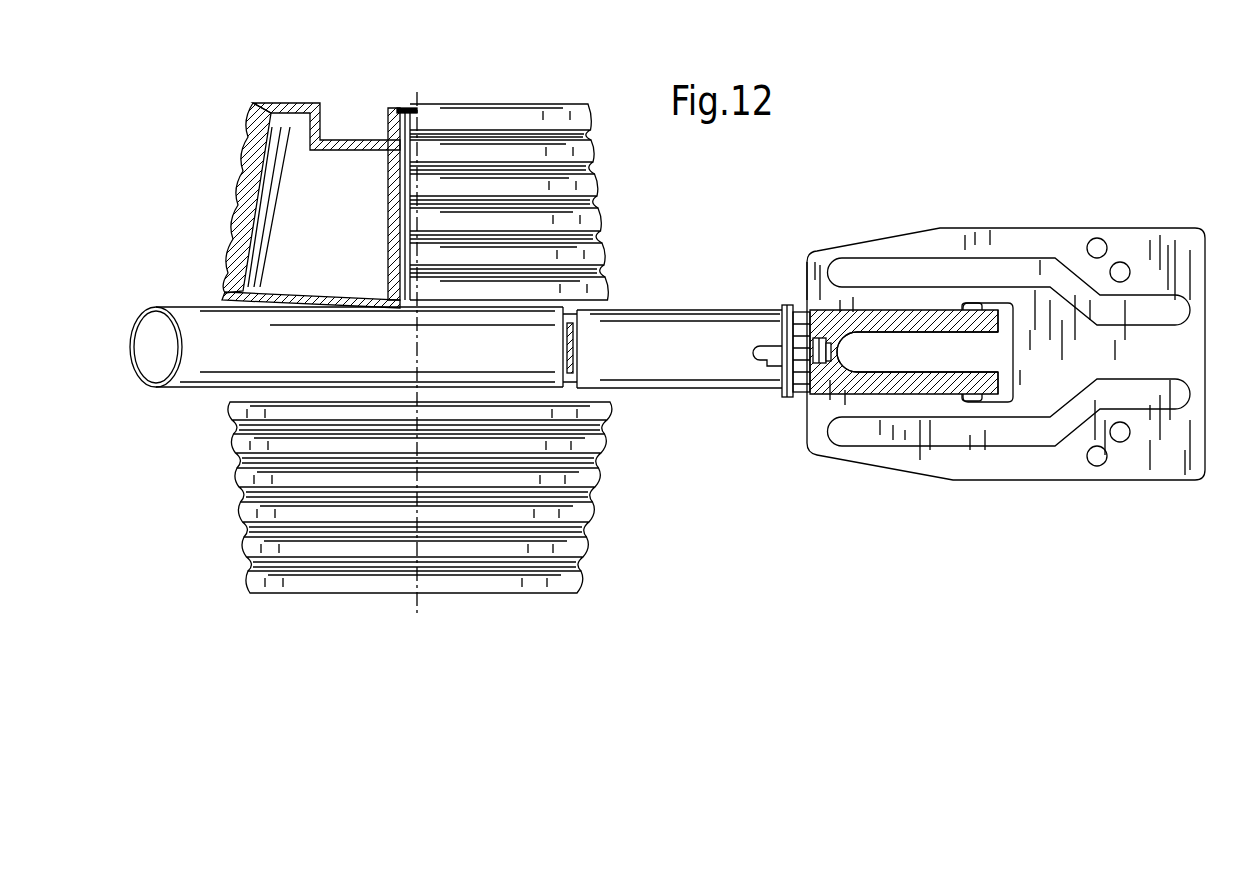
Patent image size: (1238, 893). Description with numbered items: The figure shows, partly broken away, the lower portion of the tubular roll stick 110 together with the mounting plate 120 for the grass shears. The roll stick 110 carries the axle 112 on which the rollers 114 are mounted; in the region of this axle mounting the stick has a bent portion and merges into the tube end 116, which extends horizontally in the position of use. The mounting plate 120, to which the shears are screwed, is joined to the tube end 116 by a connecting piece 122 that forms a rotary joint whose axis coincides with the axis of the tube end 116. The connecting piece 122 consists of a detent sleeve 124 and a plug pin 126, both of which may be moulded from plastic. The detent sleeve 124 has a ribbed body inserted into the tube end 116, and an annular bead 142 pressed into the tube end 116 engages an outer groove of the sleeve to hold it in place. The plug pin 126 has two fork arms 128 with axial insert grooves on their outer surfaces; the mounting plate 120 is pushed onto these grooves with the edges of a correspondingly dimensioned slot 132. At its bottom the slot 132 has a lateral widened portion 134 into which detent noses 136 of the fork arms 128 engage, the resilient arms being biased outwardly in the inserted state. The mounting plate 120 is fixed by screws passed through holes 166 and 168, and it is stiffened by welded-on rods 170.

The tubular roll stick 110 is at (166, 386).
The axle 112 is at (377, 118).
The rollers 114 is at (243, 545).
The tube end 116 is at (641, 347).
The mounting plate 120 is at (1152, 252).
The connecting piece 122 is at (788, 407).
The detent sleeve 124 is at (686, 341).
The plug pin 126 is at (822, 262).
The fork arms 128 is at (879, 310).
The slot 132 is at (944, 368).
The lateral widened portion 134 is at (971, 303).
The detent noses 136 is at (984, 306).
The annular bead 142 is at (575, 370).
The holes 166 is at (1120, 262).
The holes 168 is at (1096, 238).
The welded-on rods 170 is at (926, 262).